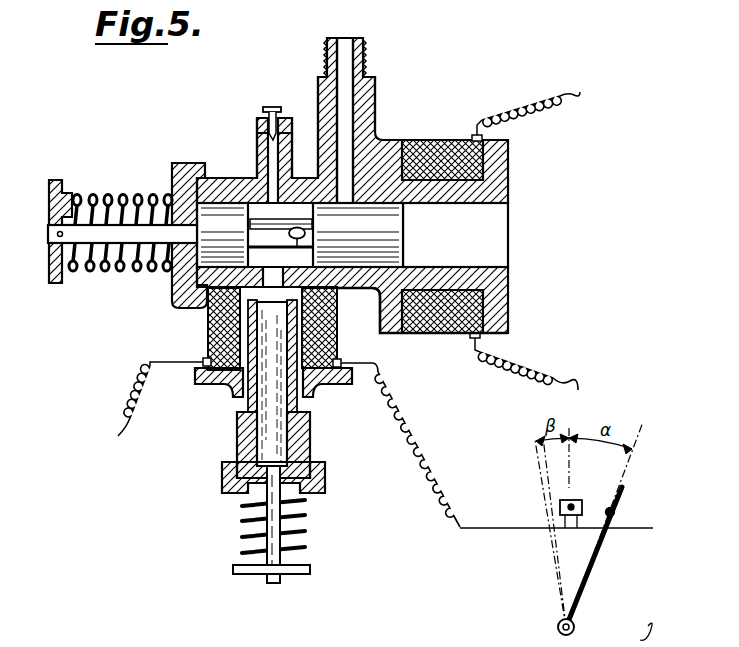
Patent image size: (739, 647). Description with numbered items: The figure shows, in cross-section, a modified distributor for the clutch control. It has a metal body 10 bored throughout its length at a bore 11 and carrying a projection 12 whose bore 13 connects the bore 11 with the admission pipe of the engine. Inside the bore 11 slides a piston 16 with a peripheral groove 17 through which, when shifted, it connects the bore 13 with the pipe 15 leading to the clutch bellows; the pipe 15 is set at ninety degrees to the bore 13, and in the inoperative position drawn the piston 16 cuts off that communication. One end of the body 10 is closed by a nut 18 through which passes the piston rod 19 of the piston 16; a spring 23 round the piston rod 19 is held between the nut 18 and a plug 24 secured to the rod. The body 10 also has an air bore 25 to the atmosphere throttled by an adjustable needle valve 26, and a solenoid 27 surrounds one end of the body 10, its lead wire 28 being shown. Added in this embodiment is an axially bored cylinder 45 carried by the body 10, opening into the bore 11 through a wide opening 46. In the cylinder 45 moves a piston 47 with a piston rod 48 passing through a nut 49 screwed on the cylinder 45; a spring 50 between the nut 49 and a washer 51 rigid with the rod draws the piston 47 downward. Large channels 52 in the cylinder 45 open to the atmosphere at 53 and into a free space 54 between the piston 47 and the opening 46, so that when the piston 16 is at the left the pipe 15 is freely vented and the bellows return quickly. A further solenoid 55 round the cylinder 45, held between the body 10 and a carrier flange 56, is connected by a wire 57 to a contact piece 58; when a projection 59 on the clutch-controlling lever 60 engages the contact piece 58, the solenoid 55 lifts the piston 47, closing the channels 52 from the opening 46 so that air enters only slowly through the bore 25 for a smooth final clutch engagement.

The metal body 10 is at (383, 150).
The bore 11 is at (490, 222).
The projection 12 is at (367, 88).
The bore 13 is at (346, 47).
The pipe 15 is at (292, 246).
The piston 16 is at (218, 213).
The peripheral groove 17 is at (281, 222).
The nut 18 is at (173, 298).
The piston rod 19 is at (95, 233).
The spring 23 is at (107, 270).
The nut or plug 24 is at (62, 193).
The bore 25 is at (257, 135).
The adjustable needle valve 26 is at (273, 106).
The solenoid 27 is at (437, 150).
The coil lead wire 28 is at (540, 95).
The cylinder 45 is at (303, 447).
The wide opening 46 is at (330, 288).
The piston 47 is at (265, 425).
The piston rod 48 is at (268, 578).
The nut 49 is at (323, 488).
The spring 50 is at (305, 533).
The washer 51 is at (300, 575).
The channels 52 is at (235, 391).
The atmospheric opening 53 is at (302, 405).
The free space 54 is at (275, 302).
The solenoid 55 is at (218, 328).
The carrier flange 56 is at (348, 380).
The wire 57 is at (420, 462).
The contact piece 58 is at (572, 503).
The projection 59 is at (635, 500).
The clutch-controlling lever 60 is at (588, 576).